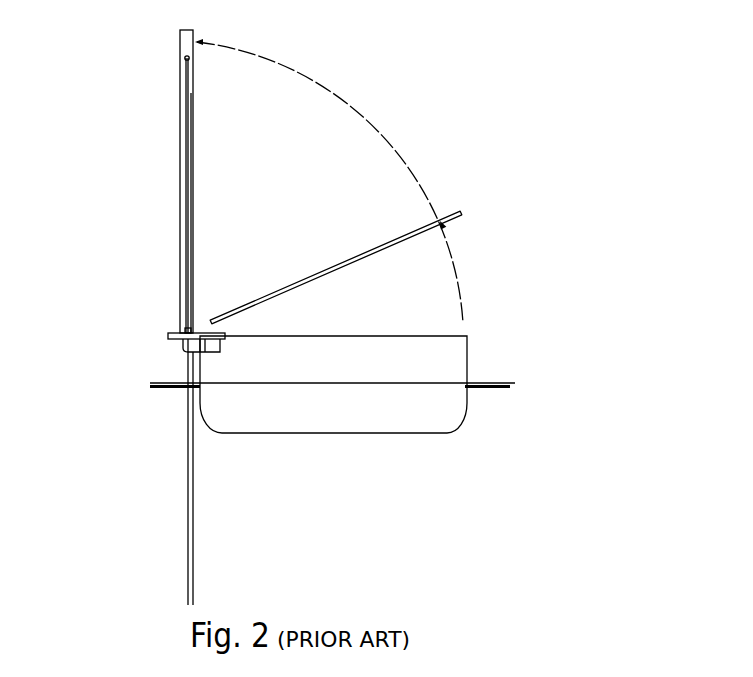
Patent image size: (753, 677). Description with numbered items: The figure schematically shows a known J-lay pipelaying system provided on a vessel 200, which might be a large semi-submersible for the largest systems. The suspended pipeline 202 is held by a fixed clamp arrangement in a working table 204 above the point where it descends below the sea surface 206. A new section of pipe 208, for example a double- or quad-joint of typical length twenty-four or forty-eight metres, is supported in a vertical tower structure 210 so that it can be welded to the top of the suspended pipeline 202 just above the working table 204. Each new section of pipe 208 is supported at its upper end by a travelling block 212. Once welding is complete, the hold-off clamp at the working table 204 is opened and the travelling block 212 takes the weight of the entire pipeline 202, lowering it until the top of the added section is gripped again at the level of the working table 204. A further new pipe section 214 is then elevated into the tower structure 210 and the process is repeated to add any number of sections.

The vessel 200 is at (412, 365).
The suspended pipeline 202 is at (115, 472).
The working table 204 is at (120, 353).
The sea surface 206 is at (396, 401).
The new section of pipe 208 is at (114, 195).
The vertical tower structure 210 is at (108, 181).
The travelling block 212 is at (180, 57).
The further new pipe section 214 is at (379, 267).